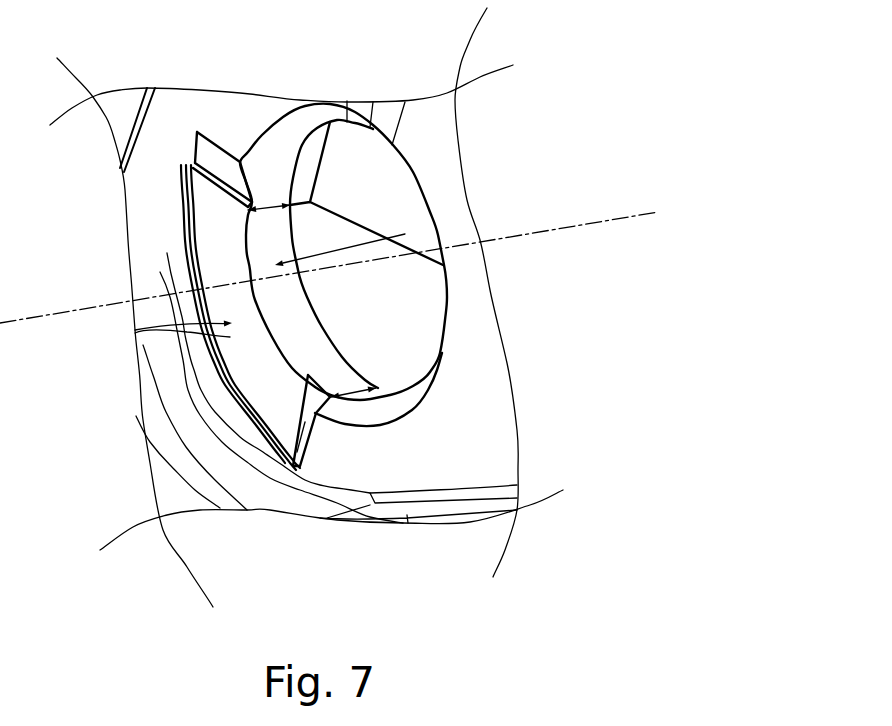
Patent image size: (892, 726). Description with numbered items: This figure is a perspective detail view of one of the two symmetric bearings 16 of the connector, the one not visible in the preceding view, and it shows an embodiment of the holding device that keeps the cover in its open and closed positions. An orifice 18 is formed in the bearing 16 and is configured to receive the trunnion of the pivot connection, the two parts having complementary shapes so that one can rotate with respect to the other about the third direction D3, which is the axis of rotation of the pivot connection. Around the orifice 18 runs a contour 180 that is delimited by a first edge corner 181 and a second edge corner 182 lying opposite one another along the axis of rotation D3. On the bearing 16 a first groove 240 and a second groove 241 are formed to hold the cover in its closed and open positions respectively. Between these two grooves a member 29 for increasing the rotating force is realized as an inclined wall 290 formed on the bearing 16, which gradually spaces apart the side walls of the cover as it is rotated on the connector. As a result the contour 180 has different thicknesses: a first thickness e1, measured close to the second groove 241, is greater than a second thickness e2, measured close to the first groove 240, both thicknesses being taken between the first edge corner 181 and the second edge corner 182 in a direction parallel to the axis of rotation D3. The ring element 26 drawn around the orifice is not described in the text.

The bearing 16 is at (134, 183).
The holder ring 26 is at (215, 182).
The member designed to increase the rotating force 29 is at (180, 325).
The inclined wall 290 is at (230, 337).
The first edge corner 181 is at (285, 356).
The contour 180 is at (380, 240).
The second edge corner 182 is at (332, 343).
The orifice 18 is at (413, 302).
The first groove 240 is at (300, 466).
The second groove 241 is at (227, 173).
The first thickness e1 is at (262, 208).
The second thickness e2 is at (355, 390).
The third direction D3 is at (598, 220).